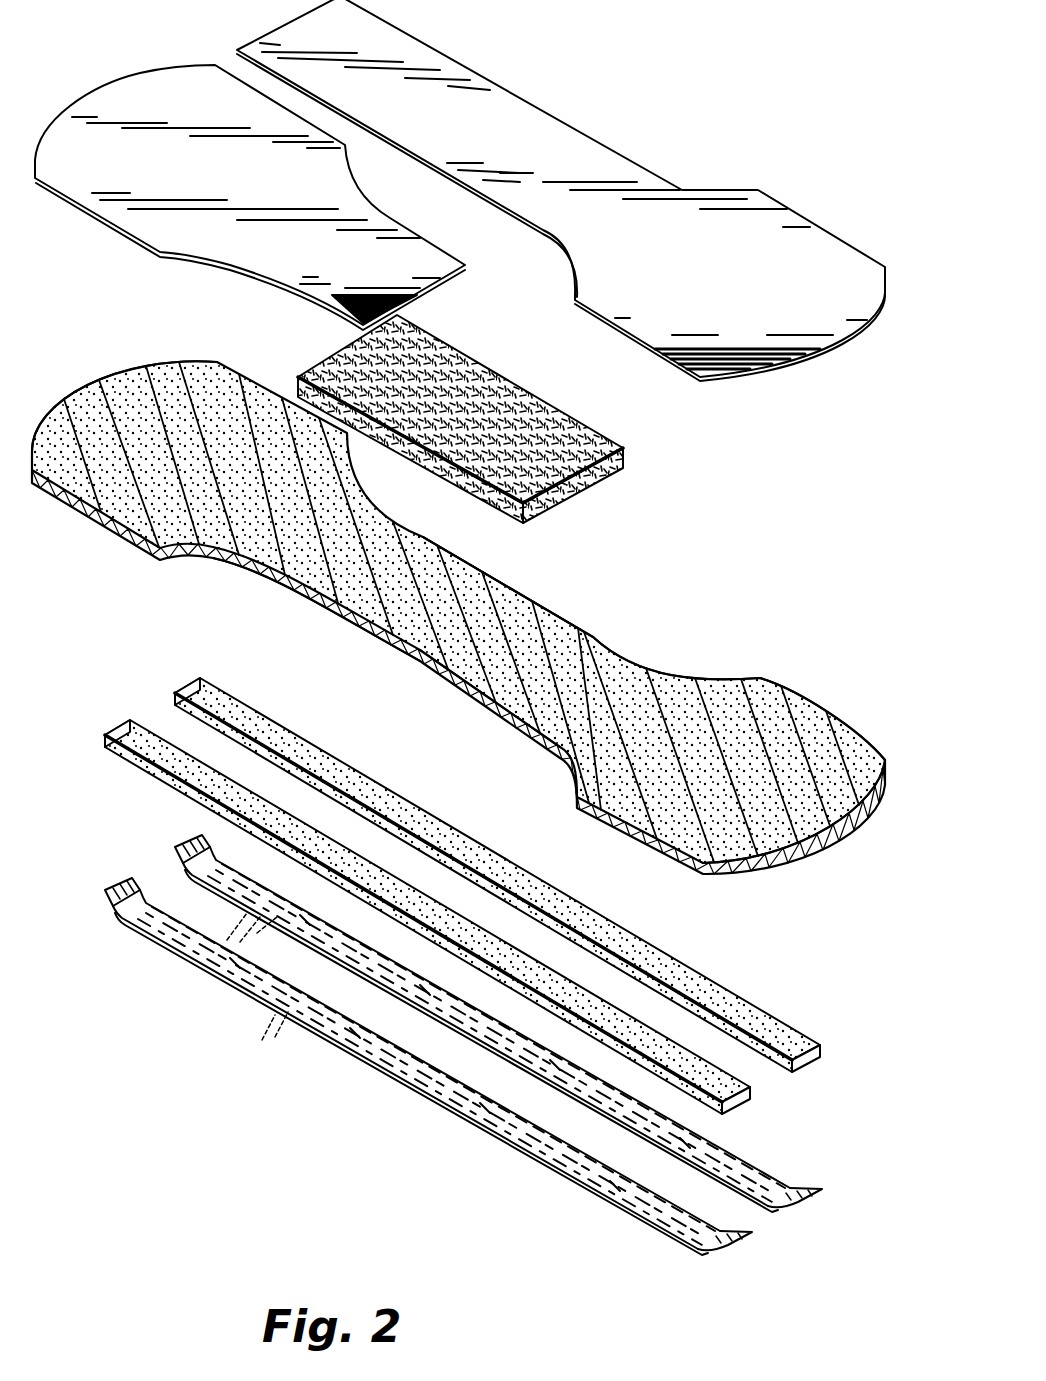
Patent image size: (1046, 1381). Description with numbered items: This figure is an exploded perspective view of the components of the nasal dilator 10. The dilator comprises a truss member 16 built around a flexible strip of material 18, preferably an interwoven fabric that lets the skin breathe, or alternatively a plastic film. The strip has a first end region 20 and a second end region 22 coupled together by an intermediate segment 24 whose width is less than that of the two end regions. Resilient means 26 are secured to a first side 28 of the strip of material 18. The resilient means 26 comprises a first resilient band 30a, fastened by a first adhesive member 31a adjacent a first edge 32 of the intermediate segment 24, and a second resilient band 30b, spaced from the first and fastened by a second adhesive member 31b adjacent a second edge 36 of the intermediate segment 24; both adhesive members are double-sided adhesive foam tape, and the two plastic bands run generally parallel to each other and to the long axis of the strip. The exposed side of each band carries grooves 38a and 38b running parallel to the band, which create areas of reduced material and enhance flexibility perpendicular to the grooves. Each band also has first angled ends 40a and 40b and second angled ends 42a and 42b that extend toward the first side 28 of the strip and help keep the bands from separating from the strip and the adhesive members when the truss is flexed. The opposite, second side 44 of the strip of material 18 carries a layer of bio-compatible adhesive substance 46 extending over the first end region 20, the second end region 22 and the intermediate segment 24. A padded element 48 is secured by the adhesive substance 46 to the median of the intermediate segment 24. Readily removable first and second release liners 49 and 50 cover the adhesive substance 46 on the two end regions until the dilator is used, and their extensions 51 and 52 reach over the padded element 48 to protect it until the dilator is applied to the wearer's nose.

The nasal dilator 10 is at (145, 51).
The truss member 16 is at (192, 642).
The flexible strip of material 18 is at (83, 524).
The first end region 20 is at (92, 403).
The second end region 22 is at (772, 830).
The intermediate segment 24 is at (505, 683).
The resilient means 26 is at (148, 828).
The first side 28 is at (680, 873).
The first resilient band 30a is at (377, 1060).
The second resilient band 30b is at (540, 1073).
The first adhesive member 31a is at (750, 1086).
The second adhesive member 31b is at (810, 1043).
The first edge 32 is at (407, 655).
The second edge 36 is at (567, 613).
The grooves 38a is at (283, 1010).
The grooves 38b is at (247, 950).
The first angled end 40a is at (113, 891).
The first angled end 40b is at (176, 850).
The second angled end 42a is at (717, 1253).
The second angled end 42b is at (777, 1210).
The second side 44 is at (617, 680).
The adhesive substance 46 is at (179, 363).
The padded element 48 is at (600, 443).
The first release liner 49 is at (181, 94).
The second release liner 50 is at (748, 237).
The extension 51 is at (345, 287).
The extension 52 is at (420, 60).